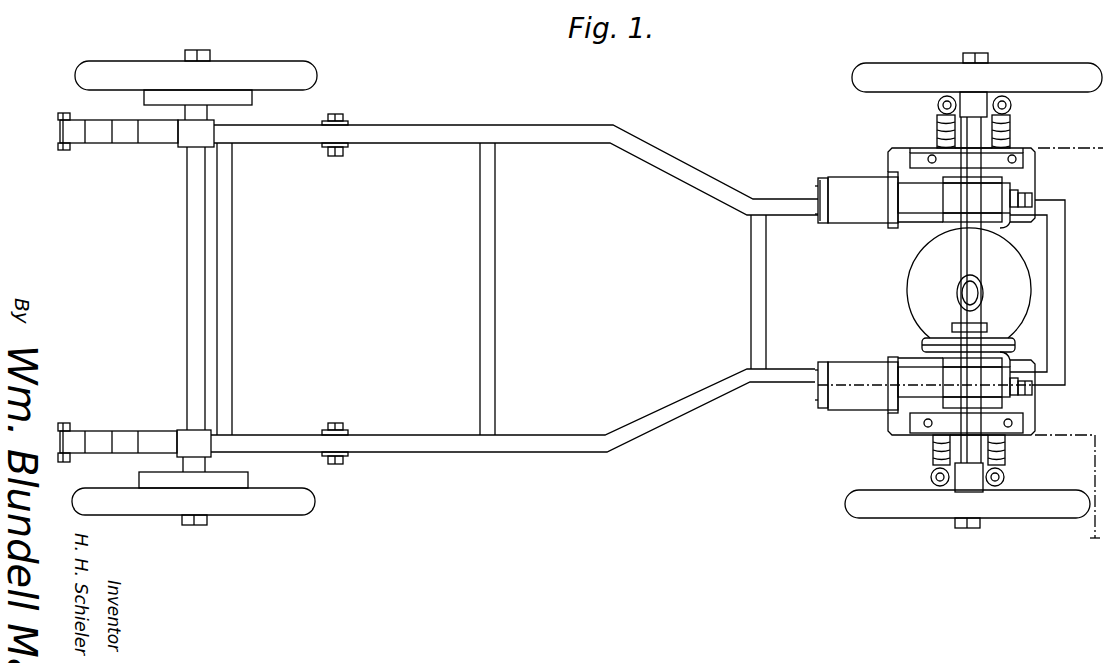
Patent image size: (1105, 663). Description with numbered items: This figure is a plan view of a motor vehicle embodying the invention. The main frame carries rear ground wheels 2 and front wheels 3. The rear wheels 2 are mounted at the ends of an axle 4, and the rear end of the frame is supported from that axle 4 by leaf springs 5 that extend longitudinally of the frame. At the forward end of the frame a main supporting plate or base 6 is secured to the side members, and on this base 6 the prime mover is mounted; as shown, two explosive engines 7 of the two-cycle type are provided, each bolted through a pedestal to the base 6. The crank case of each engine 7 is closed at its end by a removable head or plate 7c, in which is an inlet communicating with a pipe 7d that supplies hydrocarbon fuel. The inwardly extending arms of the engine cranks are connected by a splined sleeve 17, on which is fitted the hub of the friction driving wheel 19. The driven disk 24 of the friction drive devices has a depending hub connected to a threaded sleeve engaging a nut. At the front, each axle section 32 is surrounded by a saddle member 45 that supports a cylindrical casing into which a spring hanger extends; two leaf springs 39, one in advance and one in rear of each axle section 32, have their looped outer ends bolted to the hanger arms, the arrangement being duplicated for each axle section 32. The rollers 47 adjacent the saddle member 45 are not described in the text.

The rear ground wheels 2 is at (303, 77).
The front wheels 3 is at (858, 72).
The axle 4 is at (195, 359).
The leaf springs 5 is at (167, 135).
The main supporting plate or base 6 is at (1003, 231).
The explosive engines 7 is at (873, 211).
The removable head or plate 7c is at (820, 223).
The pipe 7d is at (1032, 200).
The sleeve 17 is at (978, 284).
The friction driving wheel 19 is at (1012, 345).
The driven disk 24 is at (988, 293).
The front axle section 32 is at (965, 138).
The leaf spring 39 is at (937, 128).
The saddle member 45 is at (975, 100).
The roller 47 is at (938, 105).